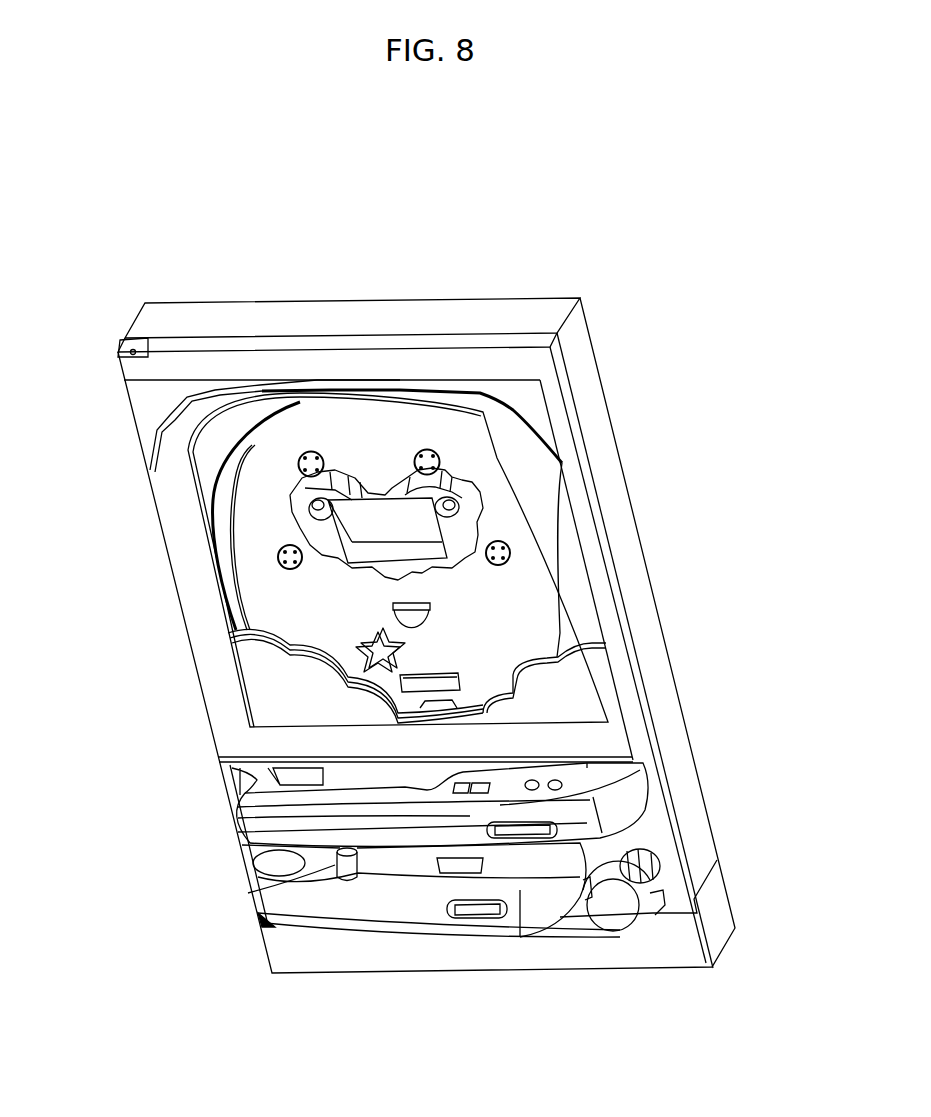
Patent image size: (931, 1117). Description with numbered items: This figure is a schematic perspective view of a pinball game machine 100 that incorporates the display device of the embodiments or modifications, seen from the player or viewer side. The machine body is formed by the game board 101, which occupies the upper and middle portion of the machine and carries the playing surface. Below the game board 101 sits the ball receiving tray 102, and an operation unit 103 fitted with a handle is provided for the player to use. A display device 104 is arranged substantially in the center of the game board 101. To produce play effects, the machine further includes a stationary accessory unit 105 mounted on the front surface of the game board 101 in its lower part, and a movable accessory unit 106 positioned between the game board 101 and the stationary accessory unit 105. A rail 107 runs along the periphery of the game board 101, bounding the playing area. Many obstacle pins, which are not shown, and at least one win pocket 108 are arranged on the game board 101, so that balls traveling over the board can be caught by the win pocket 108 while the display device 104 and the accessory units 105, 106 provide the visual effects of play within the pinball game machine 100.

The pinball game machine 100 is at (676, 997).
The game board 101 is at (527, 523).
The ball receiving tray 102 is at (260, 897).
The operation unit 103 is at (656, 893).
The display device 104 is at (375, 524).
The stationary accessory unit 105 is at (273, 690).
The movable accessory unit 106 is at (365, 648).
The rail 107 is at (233, 470).
The win pocket 108 is at (430, 606).